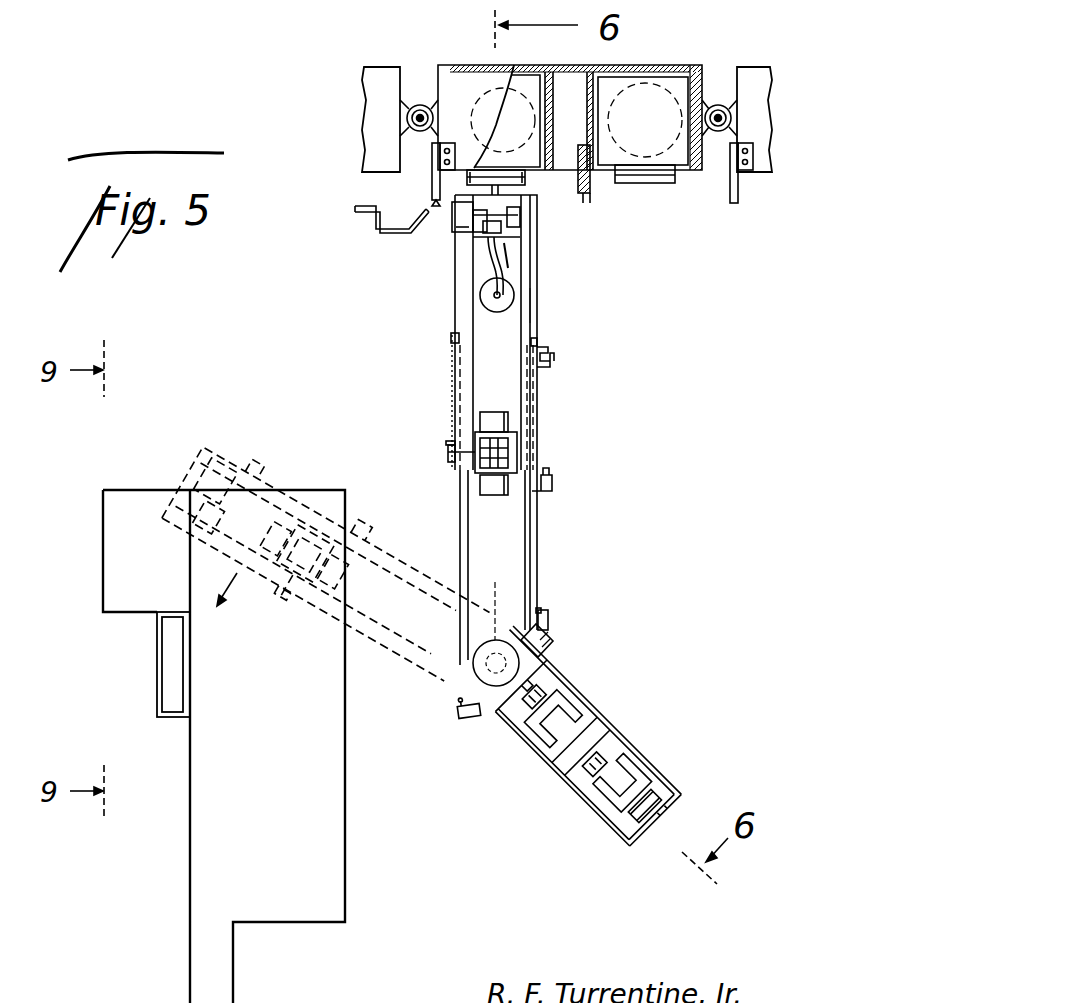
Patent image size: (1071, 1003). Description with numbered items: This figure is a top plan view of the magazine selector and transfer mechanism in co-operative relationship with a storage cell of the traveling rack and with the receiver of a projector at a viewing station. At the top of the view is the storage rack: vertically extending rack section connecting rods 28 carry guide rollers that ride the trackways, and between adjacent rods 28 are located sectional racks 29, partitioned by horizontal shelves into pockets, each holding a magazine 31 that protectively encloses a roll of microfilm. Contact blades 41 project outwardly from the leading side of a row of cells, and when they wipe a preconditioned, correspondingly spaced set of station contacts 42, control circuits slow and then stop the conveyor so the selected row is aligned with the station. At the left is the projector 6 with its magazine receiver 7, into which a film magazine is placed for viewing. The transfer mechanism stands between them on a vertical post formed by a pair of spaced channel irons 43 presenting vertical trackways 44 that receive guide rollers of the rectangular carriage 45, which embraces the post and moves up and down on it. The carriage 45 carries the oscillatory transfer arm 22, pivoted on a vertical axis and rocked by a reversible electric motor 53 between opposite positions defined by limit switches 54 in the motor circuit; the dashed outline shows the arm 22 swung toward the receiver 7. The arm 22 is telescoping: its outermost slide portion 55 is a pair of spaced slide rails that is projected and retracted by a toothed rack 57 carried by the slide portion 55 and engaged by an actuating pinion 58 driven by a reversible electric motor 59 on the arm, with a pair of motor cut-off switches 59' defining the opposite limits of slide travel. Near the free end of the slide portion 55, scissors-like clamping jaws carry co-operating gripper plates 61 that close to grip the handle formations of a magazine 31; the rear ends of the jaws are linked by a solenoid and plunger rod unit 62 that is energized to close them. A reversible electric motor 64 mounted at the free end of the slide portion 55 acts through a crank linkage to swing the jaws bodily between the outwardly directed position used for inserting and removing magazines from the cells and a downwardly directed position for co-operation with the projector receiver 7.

The projector 6 is at (190, 882).
The magazine receiver 7 is at (157, 682).
The oscillatory transfer arm 22 is at (526, 560).
The rack section connecting rods 28 is at (717, 111).
The sectional racks 29 is at (661, 65).
The magazine 31 is at (503, 101).
The contact blades 41 is at (590, 196).
The station contacts 42 is at (437, 206).
The channel irons 43 is at (572, 694).
The vertical trackways 44 is at (653, 782).
The carriage 45 is at (625, 742).
The reversible electric motor 53 is at (552, 650).
The limit switches 54 is at (551, 613).
The outermost slide portion 55 is at (530, 307).
The toothed rack 57 is at (452, 415).
The actuating pinion 58 is at (448, 452).
The reversible electric motors 59 is at (543, 449).
The motor cut-off switches 59' is at (581, 410).
The gripper plates 61 is at (518, 187).
The solenoid and plunger rod unit 62 is at (506, 290).
The reversible electric motor 64 is at (452, 222).